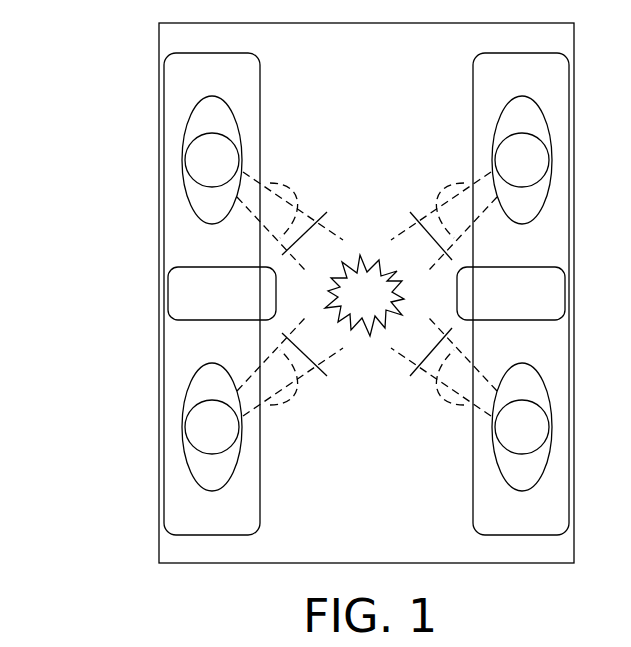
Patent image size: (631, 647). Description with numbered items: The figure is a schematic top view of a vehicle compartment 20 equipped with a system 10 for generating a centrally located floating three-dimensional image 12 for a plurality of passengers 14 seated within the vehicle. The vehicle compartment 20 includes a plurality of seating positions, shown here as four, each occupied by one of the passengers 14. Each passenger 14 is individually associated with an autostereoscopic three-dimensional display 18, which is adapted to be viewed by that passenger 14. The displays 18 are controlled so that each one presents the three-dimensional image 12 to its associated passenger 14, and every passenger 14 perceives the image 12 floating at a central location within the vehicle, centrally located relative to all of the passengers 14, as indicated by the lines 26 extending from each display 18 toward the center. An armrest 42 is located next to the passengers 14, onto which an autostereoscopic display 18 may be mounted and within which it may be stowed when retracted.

The system 10 is at (102, 534).
The three-dimensional image 12 is at (380, 307).
The passengers 14 is at (205, 119).
The autostereoscopic three-dimensional display 18 is at (305, 236).
The vehicle compartment 20 is at (538, 570).
The lines 26 is at (275, 183).
The armrest 42 is at (208, 306).